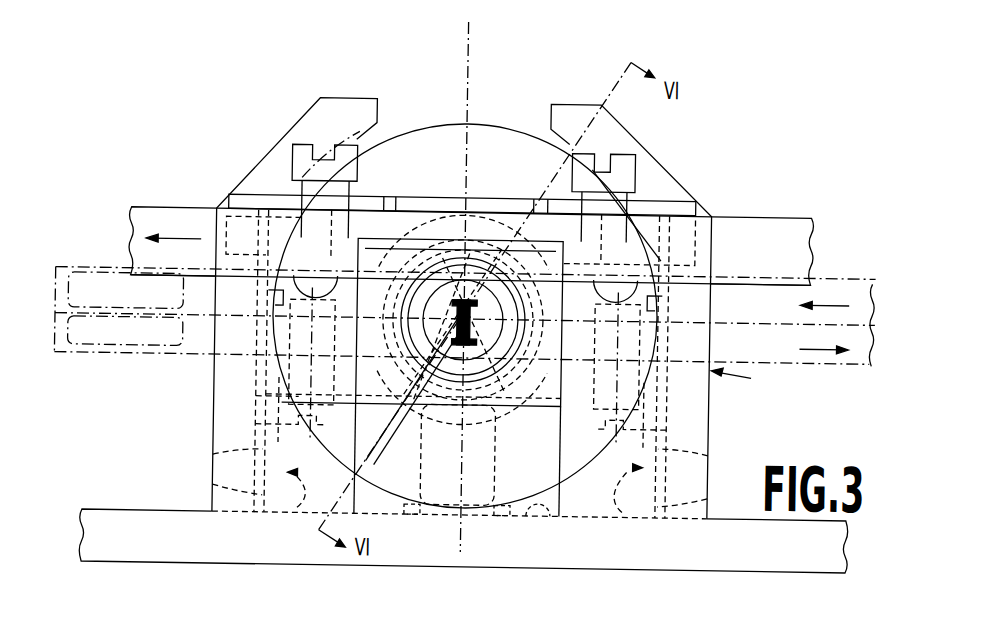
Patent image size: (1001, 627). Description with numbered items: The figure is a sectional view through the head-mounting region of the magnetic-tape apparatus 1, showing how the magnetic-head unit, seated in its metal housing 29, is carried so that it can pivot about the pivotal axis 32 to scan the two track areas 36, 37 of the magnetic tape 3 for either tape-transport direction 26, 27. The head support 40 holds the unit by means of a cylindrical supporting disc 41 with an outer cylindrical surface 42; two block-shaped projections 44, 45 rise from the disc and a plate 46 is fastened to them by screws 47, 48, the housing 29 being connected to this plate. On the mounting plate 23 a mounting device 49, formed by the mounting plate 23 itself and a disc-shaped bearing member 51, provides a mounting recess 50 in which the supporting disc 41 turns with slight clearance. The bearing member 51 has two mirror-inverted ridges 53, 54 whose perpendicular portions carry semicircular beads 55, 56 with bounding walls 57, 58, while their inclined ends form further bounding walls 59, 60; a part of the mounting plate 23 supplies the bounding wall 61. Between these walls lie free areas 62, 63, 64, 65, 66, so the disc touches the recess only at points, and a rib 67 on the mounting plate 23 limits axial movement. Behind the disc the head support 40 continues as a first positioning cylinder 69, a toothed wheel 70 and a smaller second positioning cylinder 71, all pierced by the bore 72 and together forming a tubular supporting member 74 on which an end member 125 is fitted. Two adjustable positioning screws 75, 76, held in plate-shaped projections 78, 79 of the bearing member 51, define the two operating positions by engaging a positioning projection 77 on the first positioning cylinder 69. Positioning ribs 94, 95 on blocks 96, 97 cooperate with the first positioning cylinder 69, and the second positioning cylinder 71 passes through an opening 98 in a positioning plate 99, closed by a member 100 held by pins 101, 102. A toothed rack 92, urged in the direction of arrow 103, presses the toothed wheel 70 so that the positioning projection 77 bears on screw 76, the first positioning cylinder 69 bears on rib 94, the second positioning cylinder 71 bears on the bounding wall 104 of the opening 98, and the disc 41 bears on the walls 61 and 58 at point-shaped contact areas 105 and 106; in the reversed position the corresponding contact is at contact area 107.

The magnetic-tape apparatus 1 is at (741, 129).
The magnetic tape 3 is at (76, 350).
The mounting plate 23 is at (123, 521).
The tape-transport direction 26 is at (830, 344).
The tape-transport direction 27 is at (835, 298).
The housing 29 is at (557, 200).
The pivotal axis 32 is at (468, 372).
The track area 36 is at (115, 348).
The track area 37 is at (104, 281).
The head support 40 is at (441, 122).
The supporting disc 41 is at (471, 151).
The outer cylindrical surface 42 is at (472, 125).
The block-shaped projection 44 is at (262, 295).
The block-shaped projection 45 is at (662, 295).
The plate 46 is at (268, 399).
The screw 47 is at (277, 427).
The screw 48 is at (668, 420).
The mounting device 49 is at (755, 386).
The mounting recess 50 is at (378, 137).
The bearing member 51 is at (564, 512).
The ridge 53 is at (242, 192).
The ridge 54 is at (672, 178).
The bead 55 is at (215, 458).
The bead 56 is at (710, 452).
The bounding wall 57 is at (215, 488).
The bounding wall 58 is at (710, 495).
The bounding wall 59 is at (366, 142).
The bounding wall 60 is at (558, 140).
The bounding wall 61 is at (542, 525).
The area 62 is at (231, 239).
The area 63 is at (280, 551).
The area 64 is at (634, 505).
The area 65 is at (723, 254).
The area 66 is at (552, 133).
The rib 67 is at (502, 513).
The first positioning cylinder 69 is at (456, 279).
The toothed wheel 70 is at (472, 279).
The second positioning cylinder 71 is at (462, 233).
The bore 72 is at (482, 244).
The tubular supporting member 74 is at (512, 411).
The positioning screw 75 is at (301, 146).
The positioning screw 76 is at (625, 156).
The positioning projection 77 is at (652, 334).
The plate-shaped projection 78 is at (298, 197).
The plate-shaped projection 79 is at (628, 206).
The toothed rack 92 is at (783, 223).
The positioning rib 94 is at (440, 254).
The positioning rib 95 is at (530, 230).
The block 96 is at (343, 342).
The block 97 is at (564, 421).
The opening 98 is at (447, 261).
The positioning plate 99 is at (364, 426).
The member 100 is at (368, 237).
The pin 101 is at (415, 388).
The pin 102 is at (528, 397).
The arrow 103 is at (180, 233).
The bounding wall 104 is at (458, 454).
The contact area 105 is at (450, 510).
The contact area 106 is at (705, 320).
The contact area 107 is at (268, 318).
The end member 125 is at (466, 464).